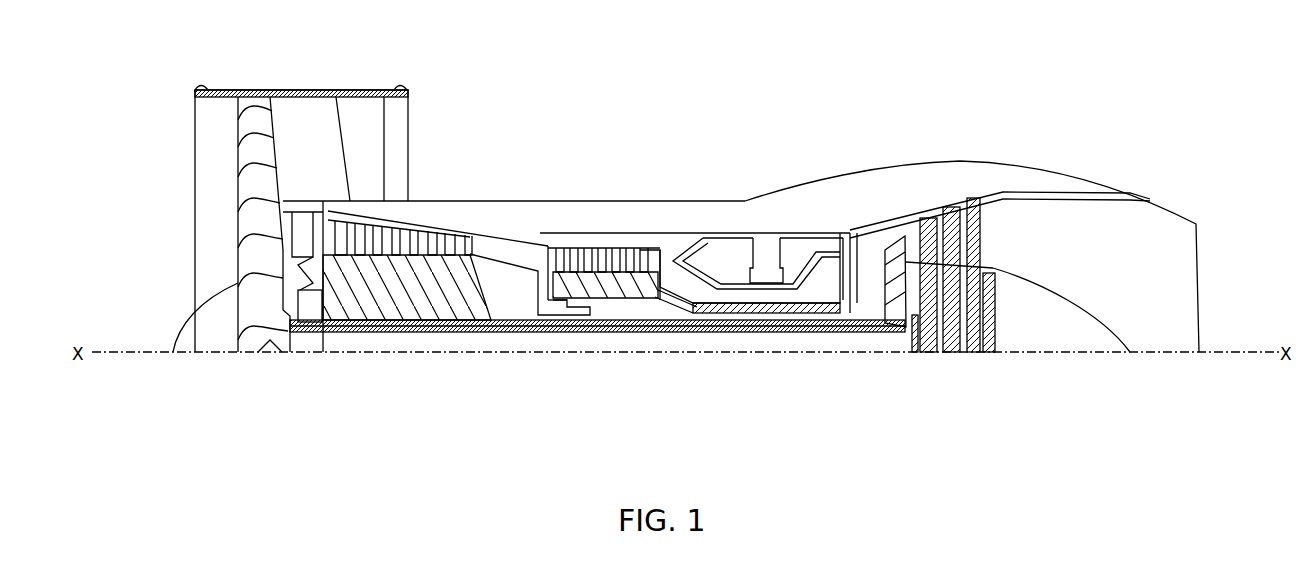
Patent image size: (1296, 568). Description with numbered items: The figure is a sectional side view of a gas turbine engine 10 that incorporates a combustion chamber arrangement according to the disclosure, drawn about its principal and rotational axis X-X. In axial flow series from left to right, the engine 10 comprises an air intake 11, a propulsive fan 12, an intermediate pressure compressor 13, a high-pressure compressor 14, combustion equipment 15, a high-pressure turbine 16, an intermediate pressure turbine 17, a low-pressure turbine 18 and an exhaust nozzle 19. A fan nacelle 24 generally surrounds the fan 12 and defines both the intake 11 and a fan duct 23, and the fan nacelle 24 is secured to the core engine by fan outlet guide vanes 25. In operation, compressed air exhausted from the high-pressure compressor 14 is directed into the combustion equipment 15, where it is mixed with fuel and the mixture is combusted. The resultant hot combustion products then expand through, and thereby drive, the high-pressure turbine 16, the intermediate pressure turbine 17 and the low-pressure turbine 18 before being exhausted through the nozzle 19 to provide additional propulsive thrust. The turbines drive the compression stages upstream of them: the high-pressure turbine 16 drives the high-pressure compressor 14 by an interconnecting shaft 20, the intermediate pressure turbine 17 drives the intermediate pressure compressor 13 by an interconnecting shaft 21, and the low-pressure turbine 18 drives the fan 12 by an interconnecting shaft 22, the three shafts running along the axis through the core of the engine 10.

The gas turbine engine 10 is at (580, 112).
The air intake 11 is at (163, 212).
The propulsive fan 12 is at (263, 122).
The intermediate pressure compressor 13 is at (418, 230).
The high-pressure compressor 14 is at (610, 242).
The combustion equipment 15 is at (768, 222).
The high-pressure turbine 16 is at (850, 233).
The intermediate pressure turbine 17 is at (892, 236).
The low-pressure turbine 18 is at (980, 220).
The exhaust nozzle 19 is at (1185, 296).
The interconnecting shaft 20 is at (838, 305).
The interconnecting shaft 21 is at (553, 318).
The interconnecting shaft 22 is at (448, 345).
The fan duct 23 is at (331, 137).
The fan nacelle 24 is at (223, 87).
The fan outlet guide vanes 25 is at (398, 125).